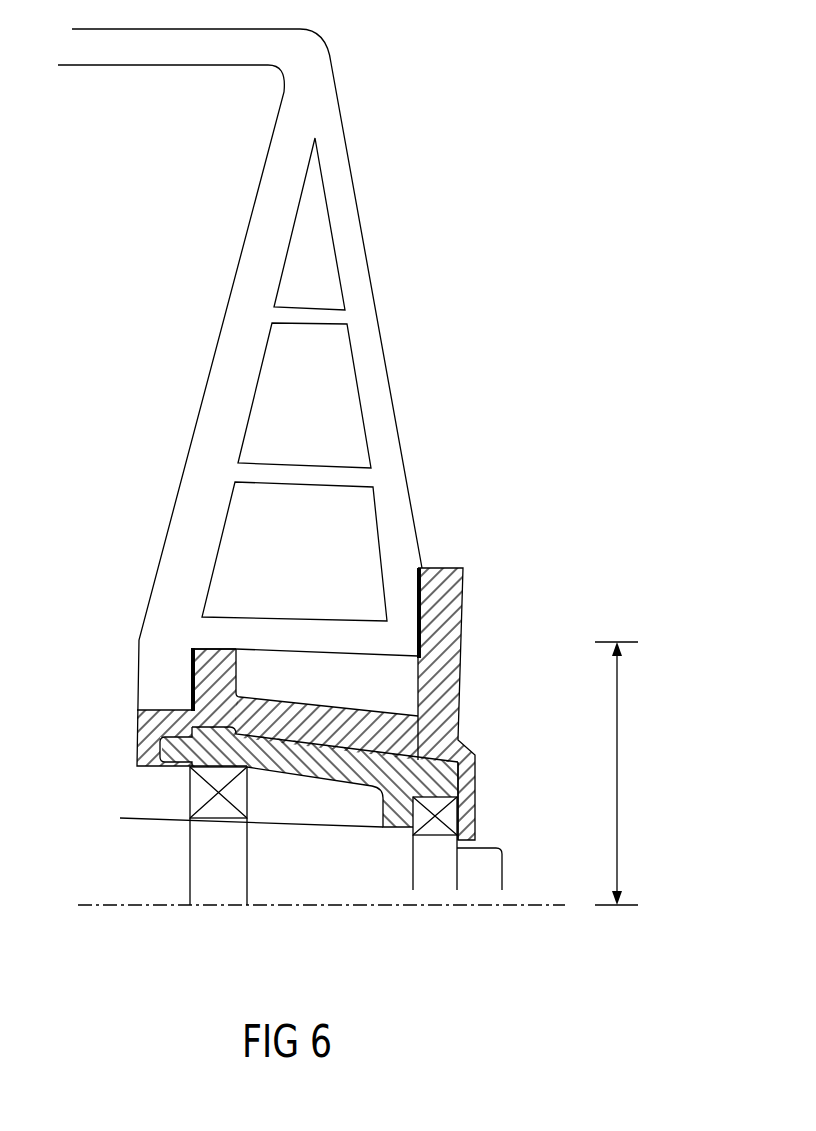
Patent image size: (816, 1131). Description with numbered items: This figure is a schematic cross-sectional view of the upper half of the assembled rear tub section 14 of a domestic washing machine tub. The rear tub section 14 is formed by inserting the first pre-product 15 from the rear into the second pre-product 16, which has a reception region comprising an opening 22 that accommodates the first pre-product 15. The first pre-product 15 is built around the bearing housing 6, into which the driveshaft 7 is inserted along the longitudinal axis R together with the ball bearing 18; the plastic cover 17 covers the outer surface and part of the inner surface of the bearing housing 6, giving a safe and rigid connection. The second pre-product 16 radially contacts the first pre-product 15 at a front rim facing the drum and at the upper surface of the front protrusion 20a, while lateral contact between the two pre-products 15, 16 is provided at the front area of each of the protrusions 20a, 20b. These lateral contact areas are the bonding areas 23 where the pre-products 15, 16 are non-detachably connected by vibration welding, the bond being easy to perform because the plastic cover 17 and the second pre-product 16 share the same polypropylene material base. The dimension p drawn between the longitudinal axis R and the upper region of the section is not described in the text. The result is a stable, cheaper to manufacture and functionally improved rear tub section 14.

The second pre-product 16 is at (335, 87).
The rear tub section 14 is at (578, 190).
The first pre-product 15 is at (357, 677).
The front protrusion 20a is at (240, 663).
The protrusion 20b is at (463, 568).
The opening 22 is at (395, 677).
The bonding areas 23 is at (415, 594).
The plastic cover 17 is at (475, 751).
The ball bearing 18 is at (190, 787).
The bearing housing 6 is at (325, 787).
The driveshaft 7 is at (503, 872).
The longitudinal axis R is at (482, 906).
The radial distance p is at (622, 773).